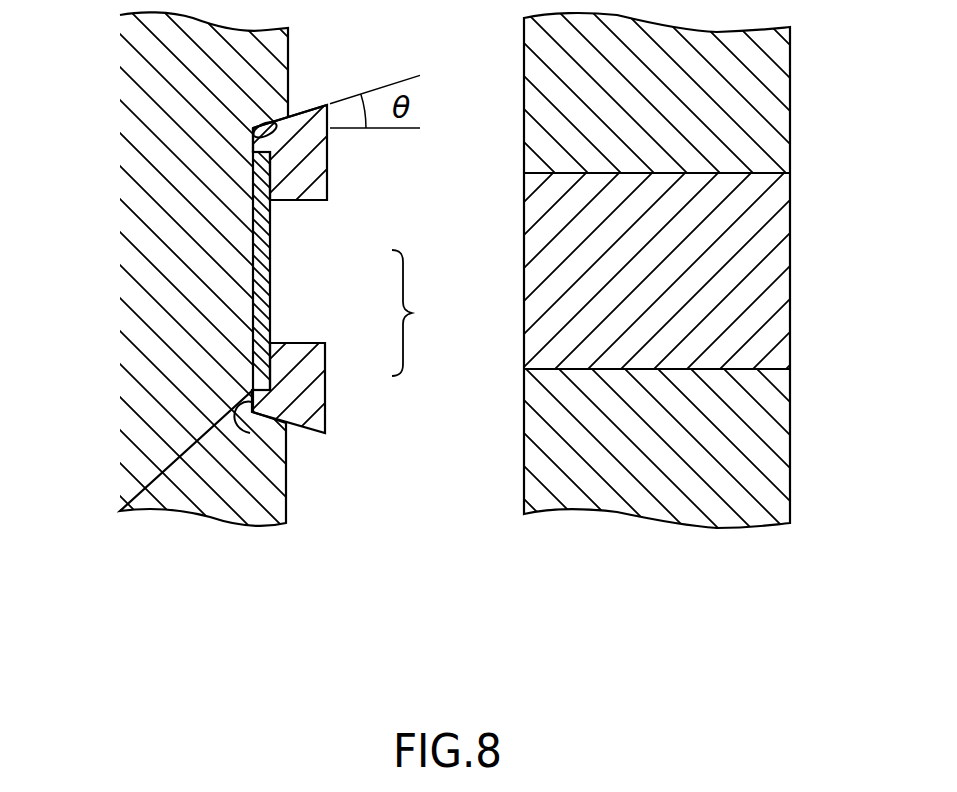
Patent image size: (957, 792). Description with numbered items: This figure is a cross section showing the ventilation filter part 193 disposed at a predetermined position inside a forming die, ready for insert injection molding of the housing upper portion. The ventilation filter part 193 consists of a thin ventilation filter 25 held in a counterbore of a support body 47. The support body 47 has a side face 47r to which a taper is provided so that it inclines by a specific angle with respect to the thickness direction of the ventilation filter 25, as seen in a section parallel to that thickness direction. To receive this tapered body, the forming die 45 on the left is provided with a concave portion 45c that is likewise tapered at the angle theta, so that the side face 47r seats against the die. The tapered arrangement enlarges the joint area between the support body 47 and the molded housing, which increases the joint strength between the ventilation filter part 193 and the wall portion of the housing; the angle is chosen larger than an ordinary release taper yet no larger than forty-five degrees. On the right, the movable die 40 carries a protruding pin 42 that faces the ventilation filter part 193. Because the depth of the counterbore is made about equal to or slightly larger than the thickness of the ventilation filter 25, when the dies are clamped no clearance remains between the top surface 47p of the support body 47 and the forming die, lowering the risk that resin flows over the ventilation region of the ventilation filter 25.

The forming die 45 is at (137, 226).
The concave portion 45c is at (253, 140).
The ventilation filter 25 is at (270, 276).
The support body 47 is at (313, 379).
The side face 47r is at (302, 113).
The top surface 47p is at (254, 431).
The ventilation filter part 193 is at (428, 313).
The movable die 40 is at (773, 117).
The protruding pin 42 is at (773, 299).